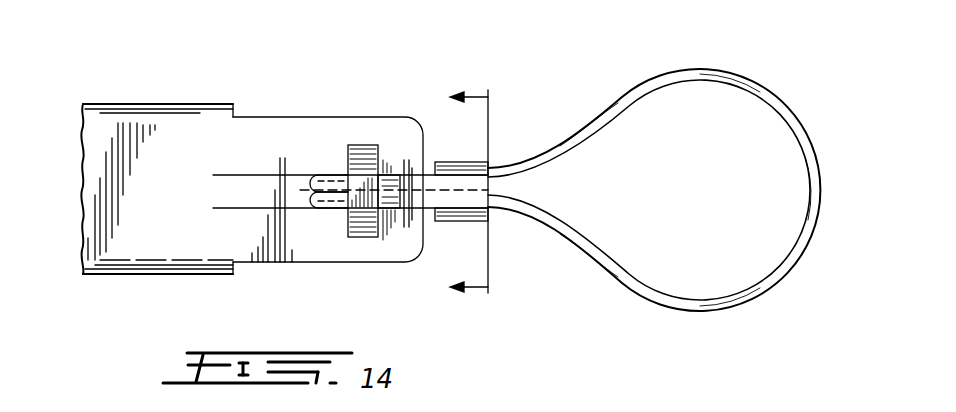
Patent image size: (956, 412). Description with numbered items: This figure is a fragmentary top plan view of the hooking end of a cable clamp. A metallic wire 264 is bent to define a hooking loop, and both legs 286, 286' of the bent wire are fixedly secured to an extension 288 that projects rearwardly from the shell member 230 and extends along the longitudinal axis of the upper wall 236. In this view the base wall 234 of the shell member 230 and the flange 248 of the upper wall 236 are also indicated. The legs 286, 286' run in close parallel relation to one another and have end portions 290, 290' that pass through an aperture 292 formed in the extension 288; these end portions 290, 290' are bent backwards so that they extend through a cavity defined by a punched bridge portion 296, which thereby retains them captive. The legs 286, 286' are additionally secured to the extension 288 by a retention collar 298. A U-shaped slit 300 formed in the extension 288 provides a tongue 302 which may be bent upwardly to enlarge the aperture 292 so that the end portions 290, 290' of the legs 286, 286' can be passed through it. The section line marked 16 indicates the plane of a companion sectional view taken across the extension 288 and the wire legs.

The shell member 230 is at (81, 154).
The base wall 234 is at (188, 104).
The upper wall 236 is at (147, 236).
The flange 248 is at (196, 274).
The metallic wire 264 is at (797, 116).
The leg 286 is at (495, 234).
The leg 286' is at (498, 145).
The extension 288 is at (327, 128).
The end portion 290 is at (368, 253).
The end portion 290' is at (379, 138).
The aperture 292 is at (310, 190).
The punched bridge portion 296 is at (373, 146).
The retention collar 298 is at (453, 222).
The U-shaped slit 300 is at (262, 173).
The tongue 302 is at (248, 187).
The section line 16- 16 is at (494, 192).